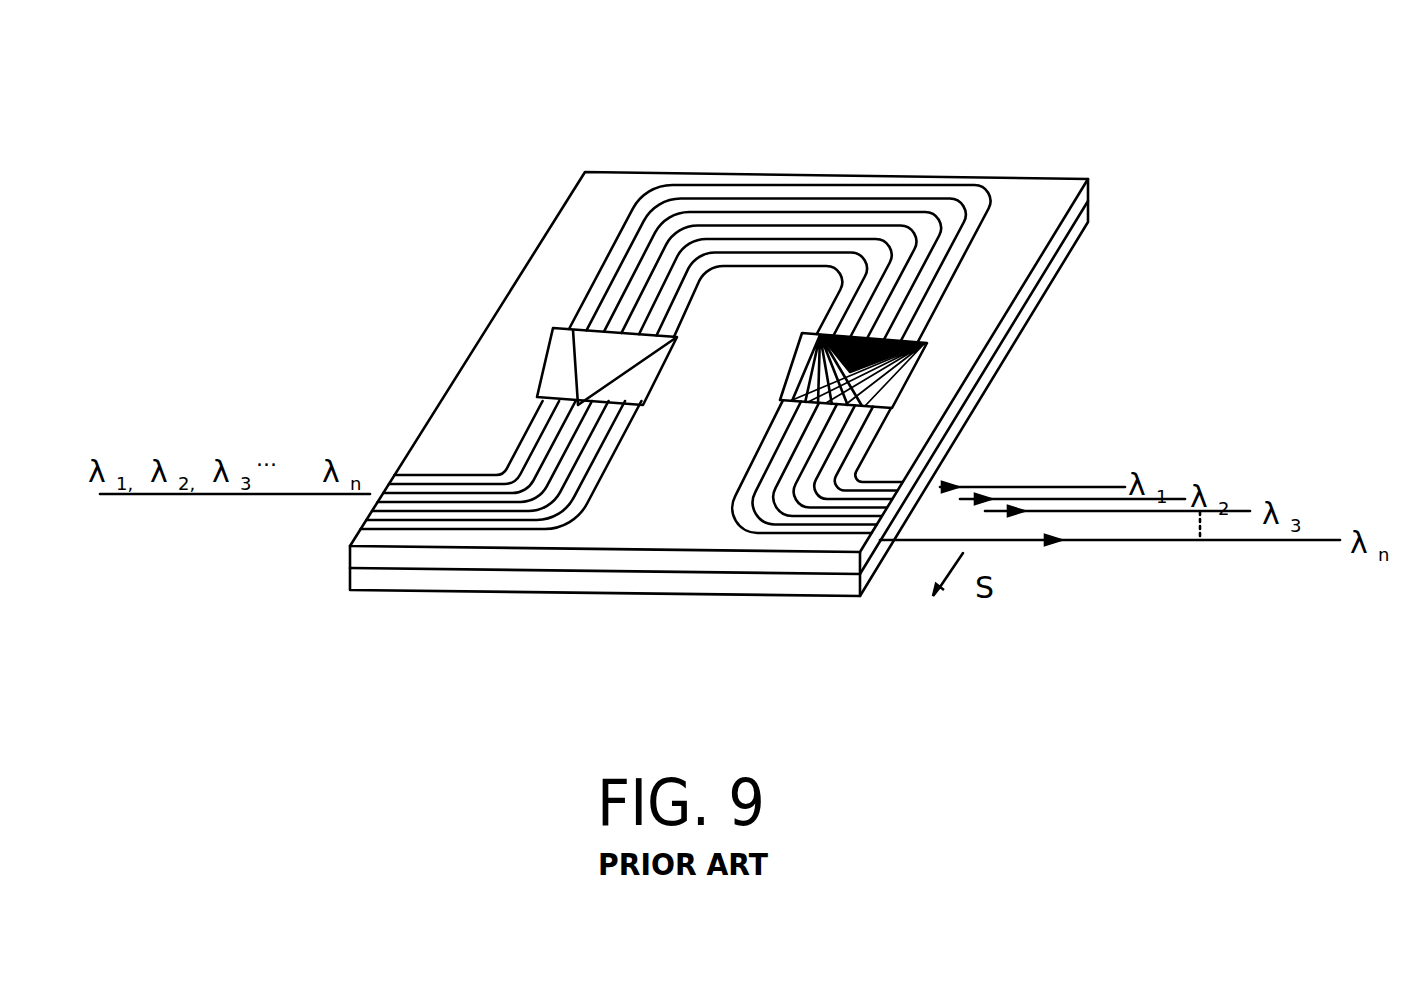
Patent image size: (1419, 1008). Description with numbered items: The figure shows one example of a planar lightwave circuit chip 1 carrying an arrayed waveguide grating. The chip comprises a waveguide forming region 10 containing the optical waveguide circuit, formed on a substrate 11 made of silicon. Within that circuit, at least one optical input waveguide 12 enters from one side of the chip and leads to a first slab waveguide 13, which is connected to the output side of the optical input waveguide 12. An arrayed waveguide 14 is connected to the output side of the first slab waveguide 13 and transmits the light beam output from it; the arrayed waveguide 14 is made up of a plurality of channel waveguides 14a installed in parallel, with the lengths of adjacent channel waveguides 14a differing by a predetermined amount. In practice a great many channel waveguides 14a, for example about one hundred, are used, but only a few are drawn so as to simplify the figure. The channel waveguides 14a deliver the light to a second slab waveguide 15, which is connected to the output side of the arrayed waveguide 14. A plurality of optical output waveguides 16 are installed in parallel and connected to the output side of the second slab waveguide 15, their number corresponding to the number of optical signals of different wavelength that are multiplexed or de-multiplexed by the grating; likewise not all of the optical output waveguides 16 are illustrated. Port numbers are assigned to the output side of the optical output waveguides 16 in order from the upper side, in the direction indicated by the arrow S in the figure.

The planar lightwave circuit chip 1 is at (770, 421).
The waveguide forming region 10 is at (1090, 181).
The substrate 11 is at (1093, 212).
The optical input waveguide 12 is at (470, 474).
The first slab waveguide 13 is at (550, 360).
The arrayed waveguide 14 is at (805, 258).
The channel waveguide 14a is at (625, 225).
The second slab waveguide 15 is at (925, 362).
The optical output waveguide 16 is at (855, 480).